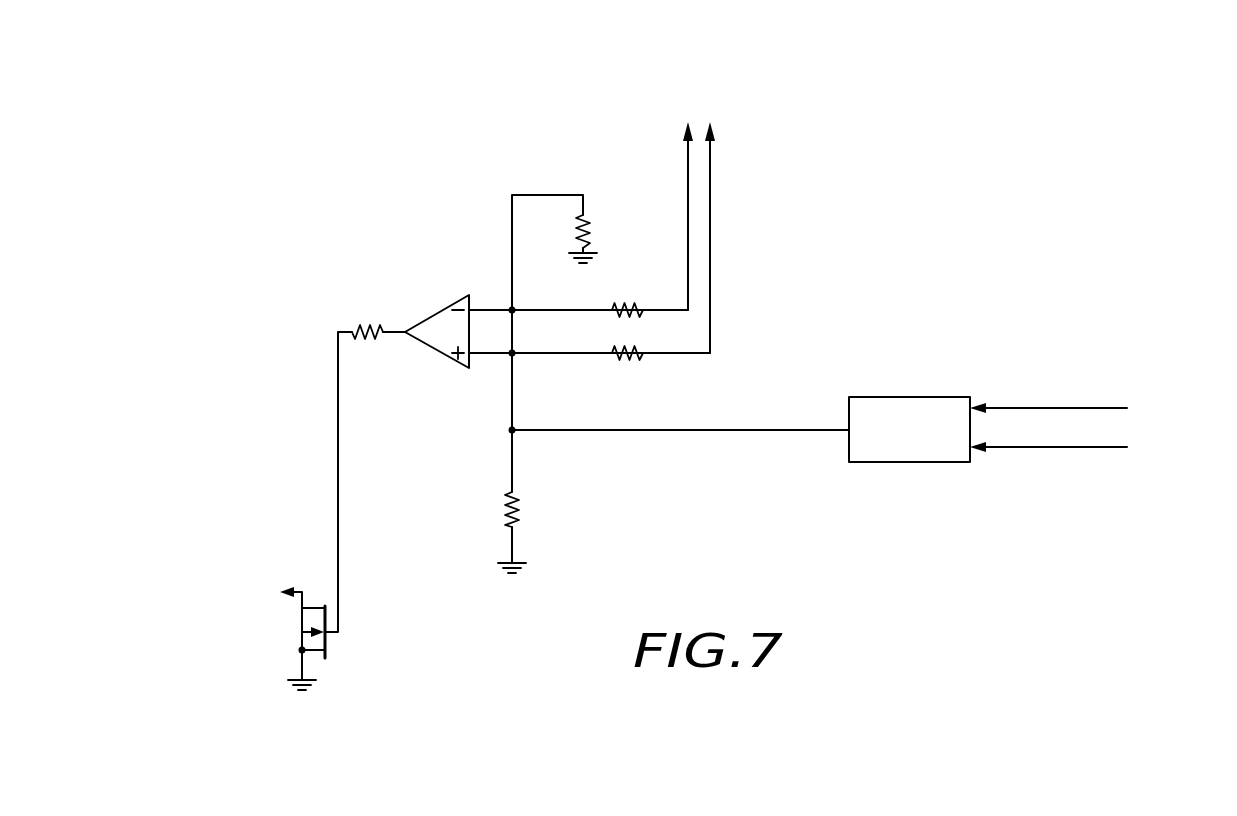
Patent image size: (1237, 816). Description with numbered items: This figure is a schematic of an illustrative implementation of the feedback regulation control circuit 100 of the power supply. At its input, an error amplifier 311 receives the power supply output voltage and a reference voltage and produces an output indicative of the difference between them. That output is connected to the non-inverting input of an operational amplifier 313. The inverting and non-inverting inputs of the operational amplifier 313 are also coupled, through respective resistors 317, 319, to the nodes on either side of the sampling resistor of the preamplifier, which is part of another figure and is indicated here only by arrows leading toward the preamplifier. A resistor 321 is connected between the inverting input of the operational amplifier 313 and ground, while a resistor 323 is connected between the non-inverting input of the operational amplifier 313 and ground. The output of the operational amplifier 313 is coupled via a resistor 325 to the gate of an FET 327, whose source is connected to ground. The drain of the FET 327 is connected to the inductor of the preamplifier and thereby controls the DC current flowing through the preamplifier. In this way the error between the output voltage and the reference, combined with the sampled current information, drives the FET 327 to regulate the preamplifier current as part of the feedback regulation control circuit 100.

The feedback regulation control circuit 100 is at (924, 116).
The error amplifier 311 is at (938, 396).
The operational amplifier 313 is at (436, 350).
The resistor 317 is at (634, 306).
The resistor 319 is at (630, 358).
The resistor 321 is at (586, 222).
The resistor 323 is at (517, 507).
The resistor 325 is at (368, 326).
The FET 327 is at (328, 643).